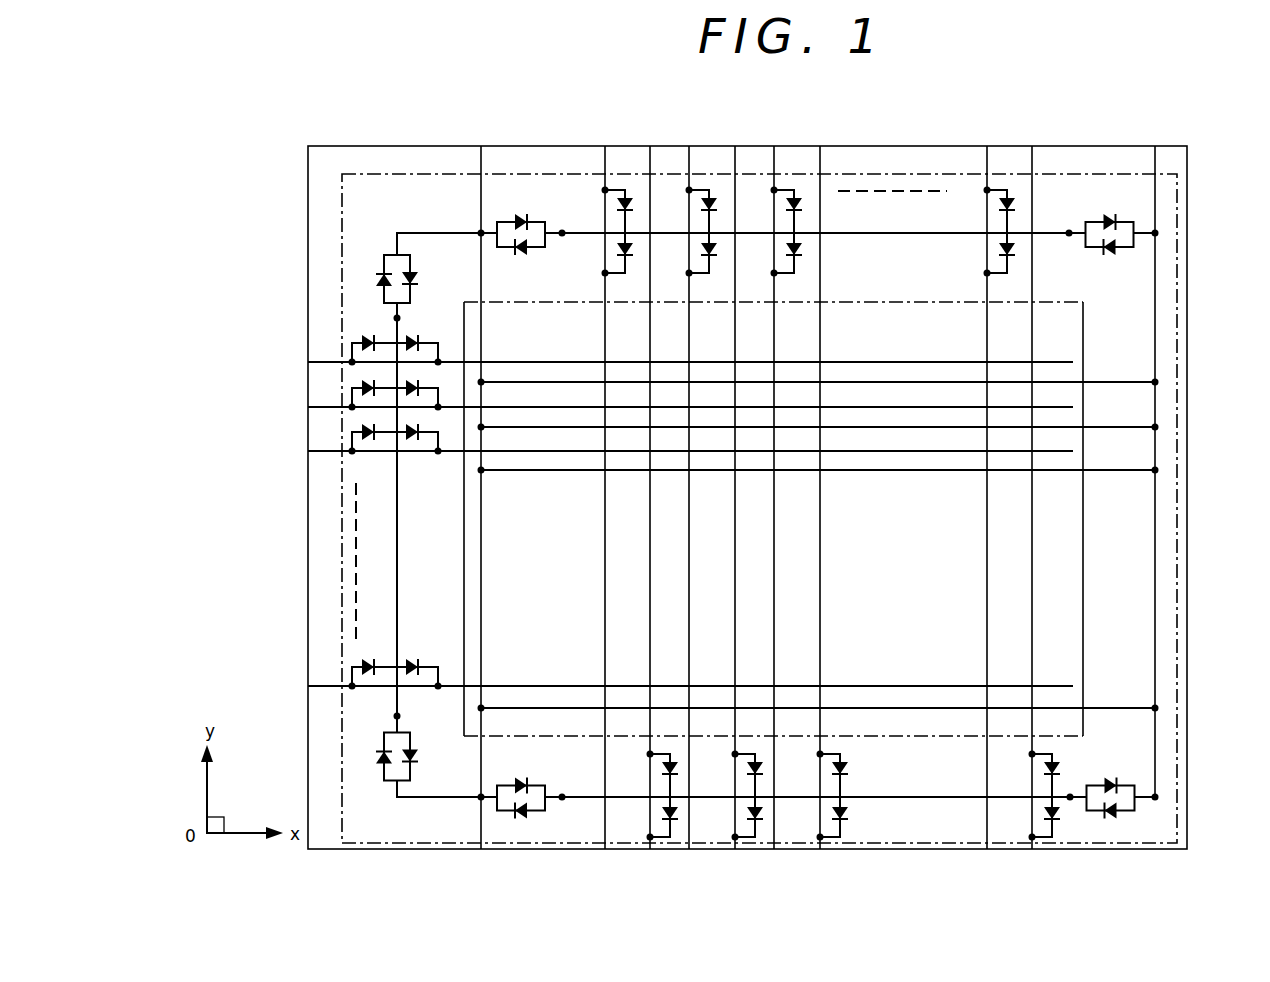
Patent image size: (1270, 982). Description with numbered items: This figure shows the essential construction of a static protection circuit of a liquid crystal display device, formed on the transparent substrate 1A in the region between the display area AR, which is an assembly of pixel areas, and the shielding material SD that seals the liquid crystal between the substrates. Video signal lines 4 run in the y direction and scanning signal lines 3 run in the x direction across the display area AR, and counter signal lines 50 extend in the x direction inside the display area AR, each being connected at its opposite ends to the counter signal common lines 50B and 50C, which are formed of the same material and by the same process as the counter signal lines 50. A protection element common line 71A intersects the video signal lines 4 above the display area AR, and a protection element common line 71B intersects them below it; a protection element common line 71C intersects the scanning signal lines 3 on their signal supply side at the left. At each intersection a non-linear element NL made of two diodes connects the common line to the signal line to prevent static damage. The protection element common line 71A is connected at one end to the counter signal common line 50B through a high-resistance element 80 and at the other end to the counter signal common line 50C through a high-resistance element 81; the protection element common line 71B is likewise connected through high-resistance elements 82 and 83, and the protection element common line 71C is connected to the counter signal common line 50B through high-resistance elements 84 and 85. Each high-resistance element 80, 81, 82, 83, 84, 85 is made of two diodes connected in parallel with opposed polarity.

The transparent substrate 1A is at (308, 160).
The shielding material SD is at (1126, 172).
The display area AR is at (1083, 569).
The video signal line 4 is at (605, 164).
The scanning signal line 3 is at (1062, 358).
The counter signal line 50 is at (1132, 380).
The counter signal common line 50B is at (481, 630).
The counter signal common line 50C is at (1155, 270).
The protection element common line 71A is at (890, 233).
The protection element common line 71B is at (900, 797).
The protection element common line 71C is at (358, 590).
The non-linear element NL is at (633, 185).
The high-resistance element 80 is at (537, 215).
The high-resistance element 81 is at (1133, 215).
The high-resistance element 82 is at (533, 818).
The high-resistance element 83 is at (1123, 813).
The high-resistance element 84 is at (375, 268).
The high-resistance element 85 is at (375, 742).